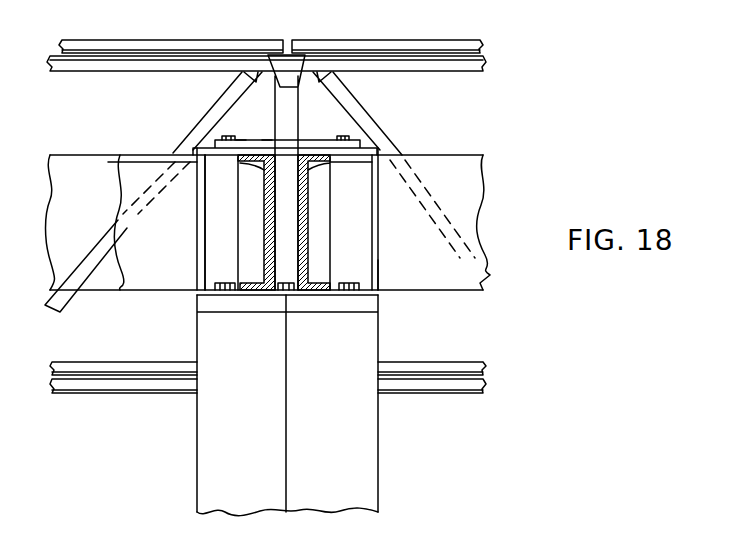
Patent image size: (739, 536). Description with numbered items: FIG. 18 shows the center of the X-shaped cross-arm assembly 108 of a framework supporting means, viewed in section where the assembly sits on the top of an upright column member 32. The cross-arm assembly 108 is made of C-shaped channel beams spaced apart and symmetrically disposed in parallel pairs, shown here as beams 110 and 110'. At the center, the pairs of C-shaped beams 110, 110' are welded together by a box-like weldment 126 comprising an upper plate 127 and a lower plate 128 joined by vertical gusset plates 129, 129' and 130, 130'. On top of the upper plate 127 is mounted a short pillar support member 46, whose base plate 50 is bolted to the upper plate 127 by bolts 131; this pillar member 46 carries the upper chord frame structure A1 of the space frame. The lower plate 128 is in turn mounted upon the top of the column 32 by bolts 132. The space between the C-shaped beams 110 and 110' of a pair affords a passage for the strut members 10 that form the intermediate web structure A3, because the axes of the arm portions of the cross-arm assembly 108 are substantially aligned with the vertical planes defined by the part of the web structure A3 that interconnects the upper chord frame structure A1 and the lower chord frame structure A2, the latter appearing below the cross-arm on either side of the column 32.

The upper chord frame structure A1 is at (441, 36).
The lower chord frame structure A2 is at (479, 395).
The intermediate web structure A3 is at (388, 119).
The strut member 10 is at (100, 249).
The upright column member 32 is at (372, 477).
The short pillar support member 46 is at (299, 127).
The base plate 50 is at (268, 140).
The X-shaped cross-arm assembly 108 is at (137, 172).
The C-shaped channel beam 110 is at (200, 239).
The C-shaped channel beam 110' is at (226, 207).
The box-like weldment 126 is at (387, 257).
The upper plate 127 is at (385, 146).
The lower plate 128 is at (378, 294).
The vertical gusset plate 129 is at (180, 219).
The vertical gusset plate 129' is at (411, 275).
The vertical gusset plate 130 is at (192, 222).
The vertical gusset plate 130' is at (392, 222).
The bolt 131 is at (238, 140).
The bolt 132 is at (225, 284).